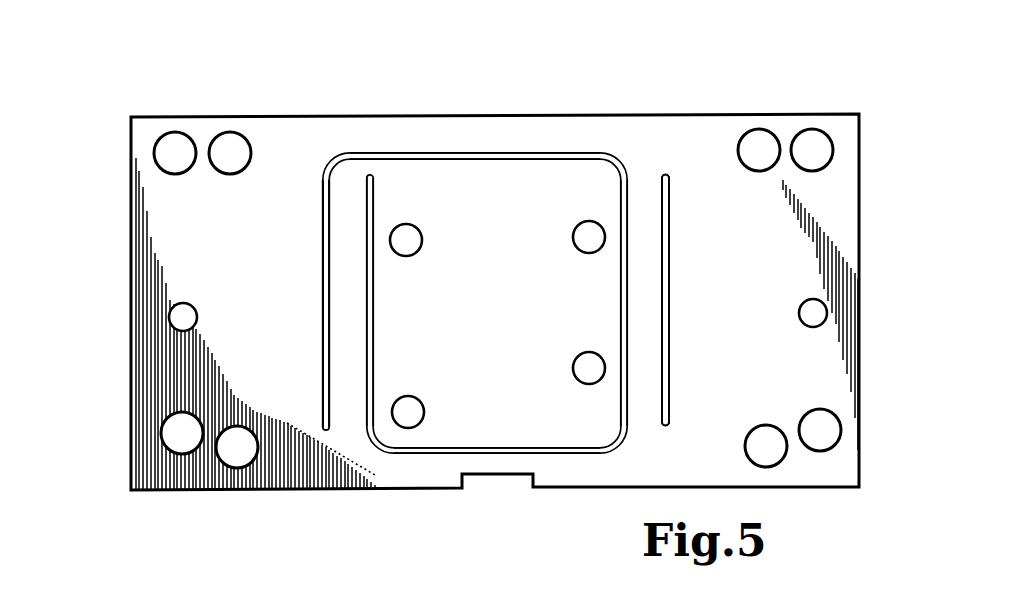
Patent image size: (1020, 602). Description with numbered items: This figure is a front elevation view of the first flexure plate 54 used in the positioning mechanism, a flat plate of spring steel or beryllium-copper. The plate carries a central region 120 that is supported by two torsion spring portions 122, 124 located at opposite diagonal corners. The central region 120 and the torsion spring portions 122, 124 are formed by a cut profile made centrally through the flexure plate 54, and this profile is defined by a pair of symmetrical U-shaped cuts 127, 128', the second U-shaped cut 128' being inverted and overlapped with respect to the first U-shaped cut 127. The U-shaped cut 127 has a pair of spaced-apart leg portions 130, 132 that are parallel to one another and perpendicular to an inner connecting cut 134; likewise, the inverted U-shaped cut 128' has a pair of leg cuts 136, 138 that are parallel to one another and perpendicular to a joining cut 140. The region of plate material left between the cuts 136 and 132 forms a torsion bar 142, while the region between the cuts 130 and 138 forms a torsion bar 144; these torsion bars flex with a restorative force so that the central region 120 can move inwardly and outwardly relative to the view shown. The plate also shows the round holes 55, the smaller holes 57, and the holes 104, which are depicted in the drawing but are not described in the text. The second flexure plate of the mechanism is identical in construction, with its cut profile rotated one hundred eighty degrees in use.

The first flexure plate 54 is at (468, 92).
The mounting holes 55 is at (170, 153).
The fastener holes 57 is at (406, 243).
The alignment holes 104 is at (183, 317).
The central region 120 is at (487, 309).
The torsion spring portion 122 is at (648, 248).
The torsion spring portion 124 is at (340, 273).
The U-shaped cut 127 is at (385, 487).
The U-shaped cut 128' is at (541, 260).
The leg portion 130 is at (378, 352).
The leg portion 132 is at (673, 322).
The inner connecting cut 134 is at (498, 443).
The leg cut 136 is at (622, 288).
The leg cut 138 is at (325, 367).
The joining cut 140 is at (455, 160).
The torsion bar 142 is at (645, 338).
The torsion bar 144 is at (342, 243).